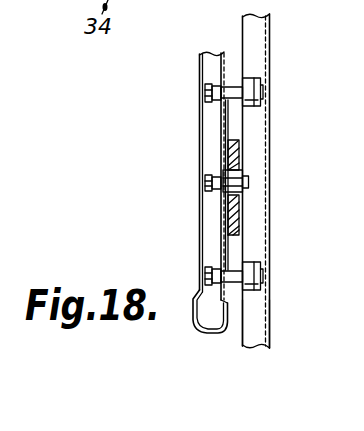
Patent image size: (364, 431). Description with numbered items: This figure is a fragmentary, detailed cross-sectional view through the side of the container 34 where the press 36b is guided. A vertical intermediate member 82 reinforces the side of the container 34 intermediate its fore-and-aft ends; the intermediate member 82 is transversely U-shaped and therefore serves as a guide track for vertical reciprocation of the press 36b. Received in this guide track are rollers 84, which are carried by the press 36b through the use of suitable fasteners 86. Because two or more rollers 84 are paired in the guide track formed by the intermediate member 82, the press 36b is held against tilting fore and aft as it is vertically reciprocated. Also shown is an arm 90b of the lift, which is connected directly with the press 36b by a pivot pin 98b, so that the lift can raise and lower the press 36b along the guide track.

The container 34 is at (272, 128).
The intermediate member 82 is at (258, 308).
The press 36b is at (200, 124).
The arm 90b is at (232, 153).
The roller 84 is at (253, 78).
The fastener 86 is at (200, 80).
The pivot pin 98b is at (243, 172).